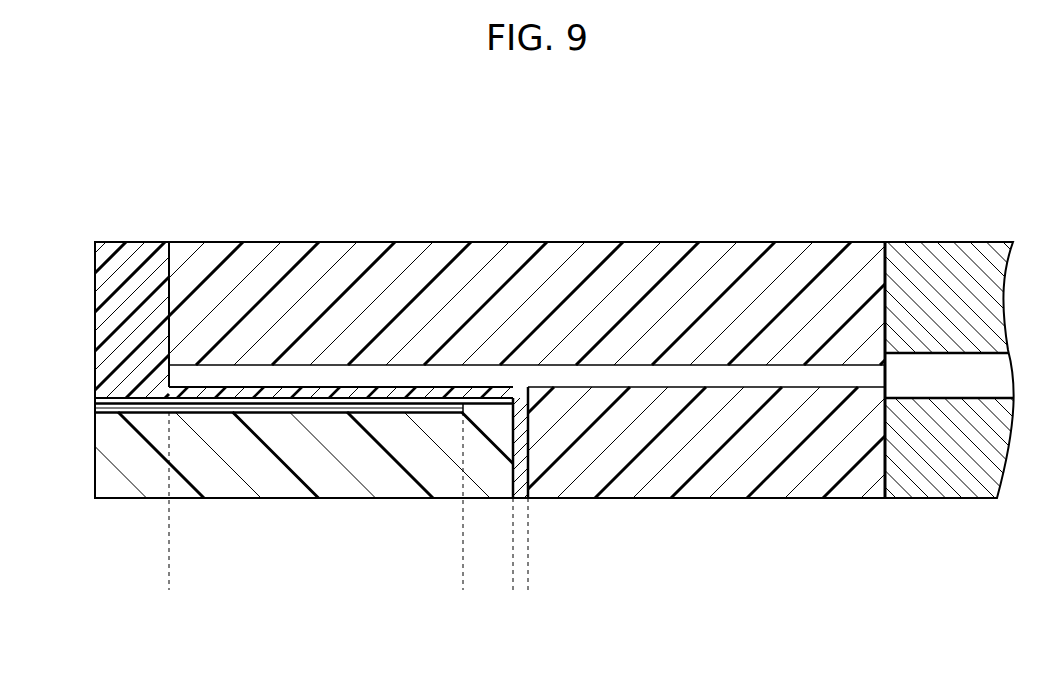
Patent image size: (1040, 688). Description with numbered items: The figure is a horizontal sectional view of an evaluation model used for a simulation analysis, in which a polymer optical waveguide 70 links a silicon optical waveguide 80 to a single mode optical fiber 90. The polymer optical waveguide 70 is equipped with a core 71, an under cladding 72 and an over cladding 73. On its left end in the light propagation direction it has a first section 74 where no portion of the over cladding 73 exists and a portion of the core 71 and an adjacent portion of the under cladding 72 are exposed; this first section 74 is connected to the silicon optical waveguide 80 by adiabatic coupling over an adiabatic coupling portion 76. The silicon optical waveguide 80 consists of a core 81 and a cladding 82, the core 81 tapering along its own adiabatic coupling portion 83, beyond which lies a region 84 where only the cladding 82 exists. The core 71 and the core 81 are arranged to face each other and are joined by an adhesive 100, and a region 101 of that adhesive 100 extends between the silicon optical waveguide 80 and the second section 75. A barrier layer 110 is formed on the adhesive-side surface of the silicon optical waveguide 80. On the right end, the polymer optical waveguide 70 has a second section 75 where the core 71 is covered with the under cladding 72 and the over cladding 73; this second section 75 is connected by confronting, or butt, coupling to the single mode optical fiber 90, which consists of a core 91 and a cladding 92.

The polymer optical waveguide 70 is at (718, 198).
The core 71 is at (741, 378).
The under cladding 72 is at (800, 272).
The over cladding 73 is at (813, 473).
The first section 74 is at (252, 242).
The second section 75 is at (855, 242).
The adiabatic coupling portion 76 is at (169, 557).
The silicon optical waveguide 80 is at (130, 524).
The core 81 is at (115, 413).
The cladding 82 is at (238, 483).
The adiabatic coupling portion 83 is at (169, 567).
The region where only cladding exists 84 is at (463, 560).
The single mode optical fiber 90 is at (975, 224).
The core 91 is at (960, 388).
The cladding 92 is at (927, 473).
The adhesive 100 is at (330, 392).
The region between silicon optical waveguide and second section 101 is at (513, 560).
The barrier layer 110 is at (115, 397).